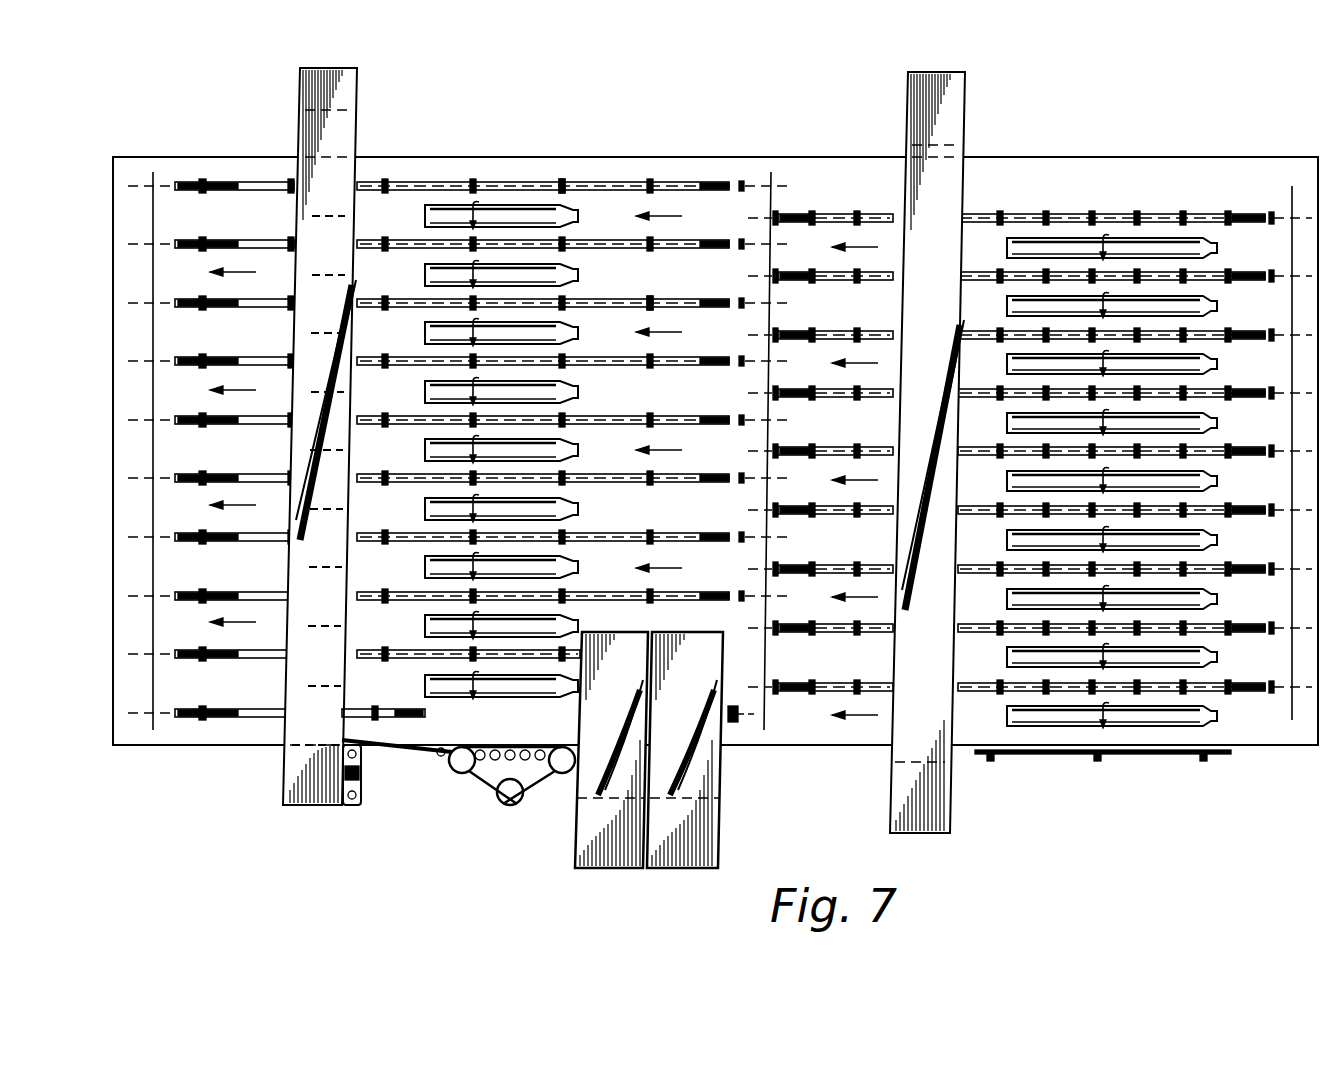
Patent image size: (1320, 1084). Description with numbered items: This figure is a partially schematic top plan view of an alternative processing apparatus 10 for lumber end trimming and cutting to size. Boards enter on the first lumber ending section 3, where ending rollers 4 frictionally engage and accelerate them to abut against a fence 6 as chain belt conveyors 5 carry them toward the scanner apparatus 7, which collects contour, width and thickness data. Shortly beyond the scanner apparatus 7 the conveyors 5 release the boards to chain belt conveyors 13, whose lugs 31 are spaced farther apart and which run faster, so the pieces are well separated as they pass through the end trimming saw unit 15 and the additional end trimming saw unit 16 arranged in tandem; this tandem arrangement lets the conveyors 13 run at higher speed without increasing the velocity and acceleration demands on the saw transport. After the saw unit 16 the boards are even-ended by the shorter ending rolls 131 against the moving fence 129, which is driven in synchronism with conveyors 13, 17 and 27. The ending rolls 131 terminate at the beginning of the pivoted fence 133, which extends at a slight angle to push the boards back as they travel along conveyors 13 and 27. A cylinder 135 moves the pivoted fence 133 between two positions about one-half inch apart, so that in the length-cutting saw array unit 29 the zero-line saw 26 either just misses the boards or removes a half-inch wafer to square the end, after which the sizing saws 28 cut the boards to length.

The first lumber ending section 3 is at (1118, 154).
The ending rollers 4 is at (1214, 256).
The chain belt conveyors 5 is at (1238, 270).
The fence 6 is at (1130, 757).
The scanner apparatus 7 is at (958, 790).
The processing apparatus 10 is at (600, 154).
The chain belt conveyors 13 is at (688, 182).
The end trimming saw unit 15 is at (730, 832).
The additional end trimming saw unit 16 is at (575, 830).
The conveyor 17 is at (770, 722).
The zero-line saw 26 is at (330, 742).
The chain belt conveyor 27 is at (400, 708).
The sizing saws 28 is at (340, 214).
The length-cutting saw array unit 29 is at (280, 782).
The lugs 31 is at (564, 183).
The moving fence 129 is at (502, 746).
The ending rolls 131 is at (425, 214).
The pivoted fence 133 is at (382, 746).
The cylinder 135 is at (362, 778).